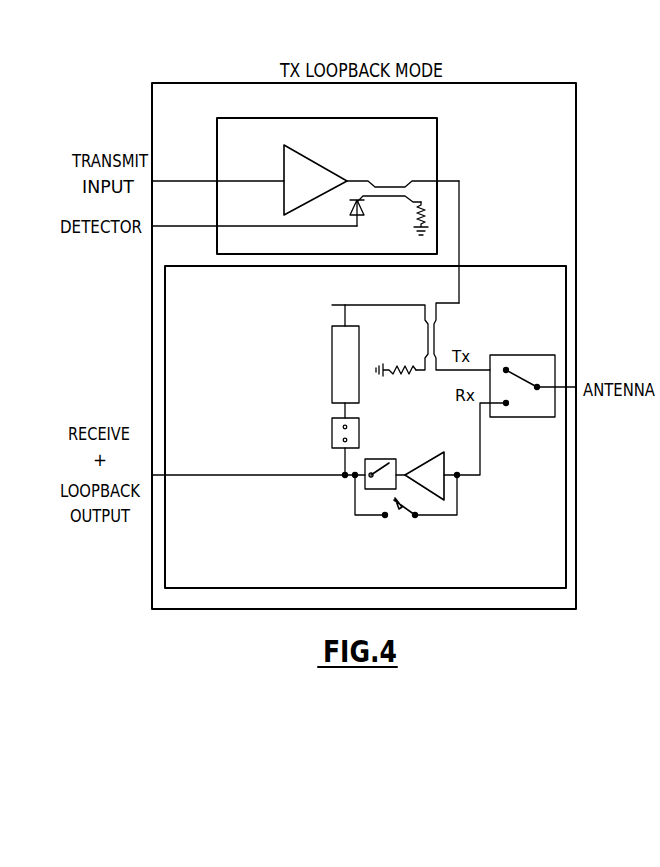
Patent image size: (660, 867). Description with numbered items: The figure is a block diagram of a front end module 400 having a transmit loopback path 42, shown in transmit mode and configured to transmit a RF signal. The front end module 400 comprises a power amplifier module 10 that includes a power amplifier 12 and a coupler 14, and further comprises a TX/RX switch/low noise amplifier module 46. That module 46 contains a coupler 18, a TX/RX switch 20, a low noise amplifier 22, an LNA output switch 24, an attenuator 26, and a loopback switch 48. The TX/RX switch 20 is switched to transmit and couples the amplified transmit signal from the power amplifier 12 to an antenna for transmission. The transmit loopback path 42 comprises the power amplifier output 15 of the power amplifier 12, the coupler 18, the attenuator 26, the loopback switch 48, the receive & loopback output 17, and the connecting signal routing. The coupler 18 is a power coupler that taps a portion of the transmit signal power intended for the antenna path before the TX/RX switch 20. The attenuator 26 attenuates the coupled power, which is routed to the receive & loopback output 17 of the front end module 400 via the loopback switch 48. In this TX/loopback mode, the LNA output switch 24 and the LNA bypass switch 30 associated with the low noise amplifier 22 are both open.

The front end module 400 is at (166, 83).
The power amplifier module 10 is at (438, 141).
The power amplifier 12 is at (284, 166).
The coupler 14 is at (387, 196).
The power amplifier output 15 is at (460, 208).
The TX/RX switch/low noise amplifier module 46 is at (506, 266).
The coupler 18 is at (435, 340).
The TX/RX switch 20 is at (522, 355).
The attenuator 26 is at (330, 362).
The loopback switch 48 is at (330, 437).
The receive & loopback output 17 is at (173, 478).
The LNA output switch 24 is at (380, 459).
The low noise amplifier 22 is at (434, 500).
The LNA bypass switch 30 is at (385, 517).
The transmit loopback path 42 is at (208, 397).